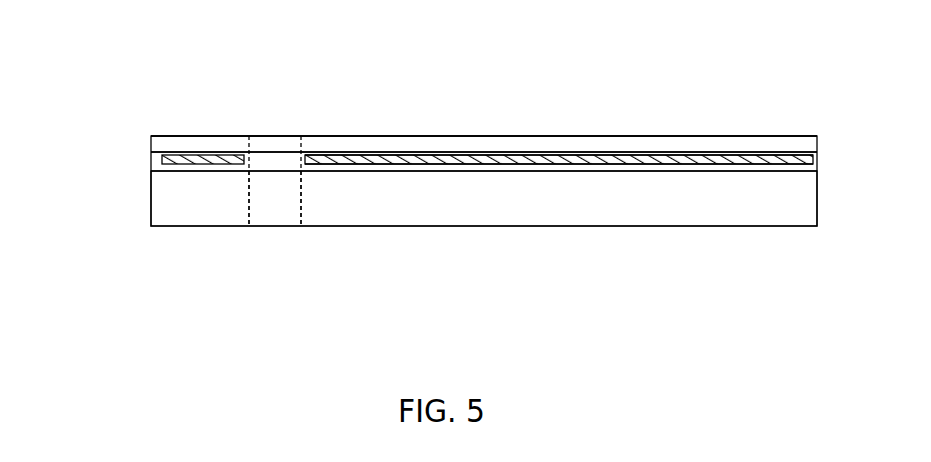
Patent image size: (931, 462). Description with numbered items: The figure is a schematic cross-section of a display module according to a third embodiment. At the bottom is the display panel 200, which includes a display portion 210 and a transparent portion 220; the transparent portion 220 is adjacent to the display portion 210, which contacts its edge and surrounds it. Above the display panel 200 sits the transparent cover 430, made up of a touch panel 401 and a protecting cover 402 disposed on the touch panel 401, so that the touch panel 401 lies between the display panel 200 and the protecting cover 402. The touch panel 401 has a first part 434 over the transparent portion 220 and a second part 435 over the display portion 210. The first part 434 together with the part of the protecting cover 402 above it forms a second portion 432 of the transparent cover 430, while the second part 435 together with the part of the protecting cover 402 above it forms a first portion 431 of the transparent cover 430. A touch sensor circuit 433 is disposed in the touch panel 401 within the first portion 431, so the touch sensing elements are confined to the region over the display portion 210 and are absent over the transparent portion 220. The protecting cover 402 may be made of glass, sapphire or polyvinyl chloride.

The display panel 200 is at (150, 225).
The display portion 210 is at (668, 202).
The transparent portion 220 is at (285, 200).
The transparent cover 430 is at (151, 137).
The first portion 431 is at (432, 151).
The second portion 432 is at (275, 152).
The touch sensor circuit 433 is at (530, 163).
The first part 434 is at (257, 163).
The second part 435 is at (473, 165).
The touch panel 401 is at (797, 168).
The protecting cover 402 is at (743, 142).